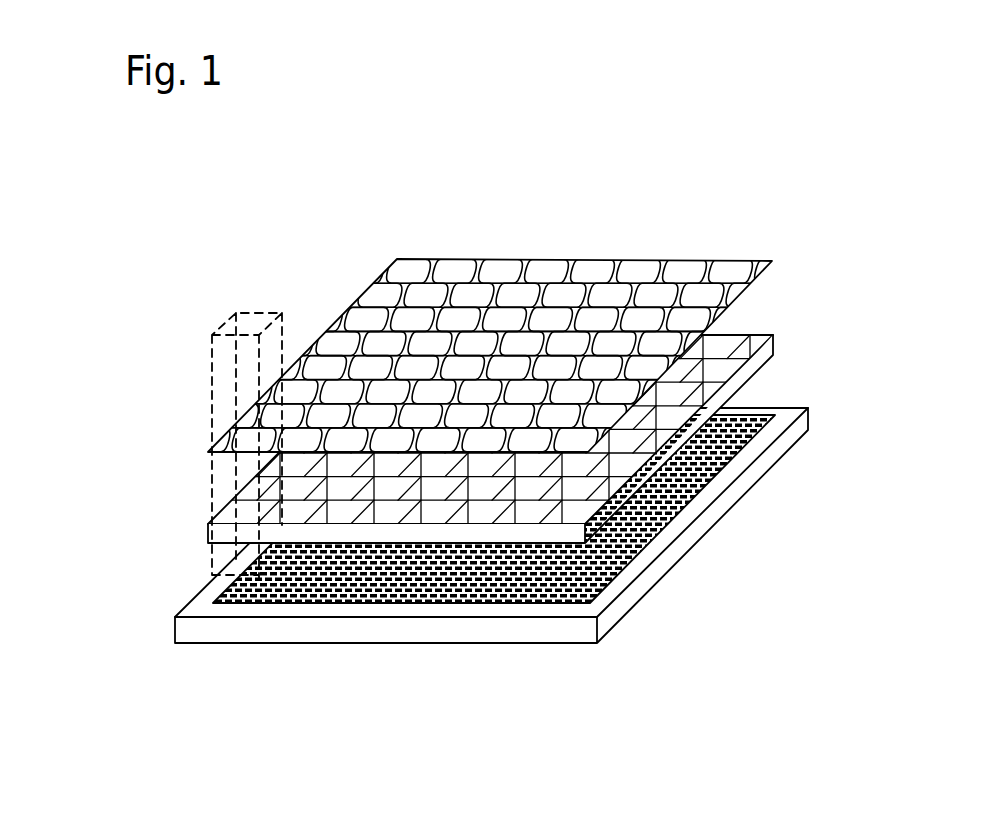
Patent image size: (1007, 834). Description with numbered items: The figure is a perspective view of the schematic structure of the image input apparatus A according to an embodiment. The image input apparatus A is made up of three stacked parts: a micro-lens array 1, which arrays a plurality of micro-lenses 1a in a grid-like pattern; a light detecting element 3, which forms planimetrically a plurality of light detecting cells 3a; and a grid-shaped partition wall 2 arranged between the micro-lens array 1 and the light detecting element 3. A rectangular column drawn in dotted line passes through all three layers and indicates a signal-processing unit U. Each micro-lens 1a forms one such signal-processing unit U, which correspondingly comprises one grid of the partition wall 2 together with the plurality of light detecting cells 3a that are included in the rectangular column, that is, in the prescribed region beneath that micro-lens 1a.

The image input apparatus A is at (543, 163).
The micro-lens array 1 is at (790, 256).
The micro-lens 1a is at (698, 264).
The partition wall 2 is at (802, 347).
The light detecting element 3 is at (716, 556).
The light detecting cell 3a is at (452, 603).
The signal-processing unit U is at (208, 402).